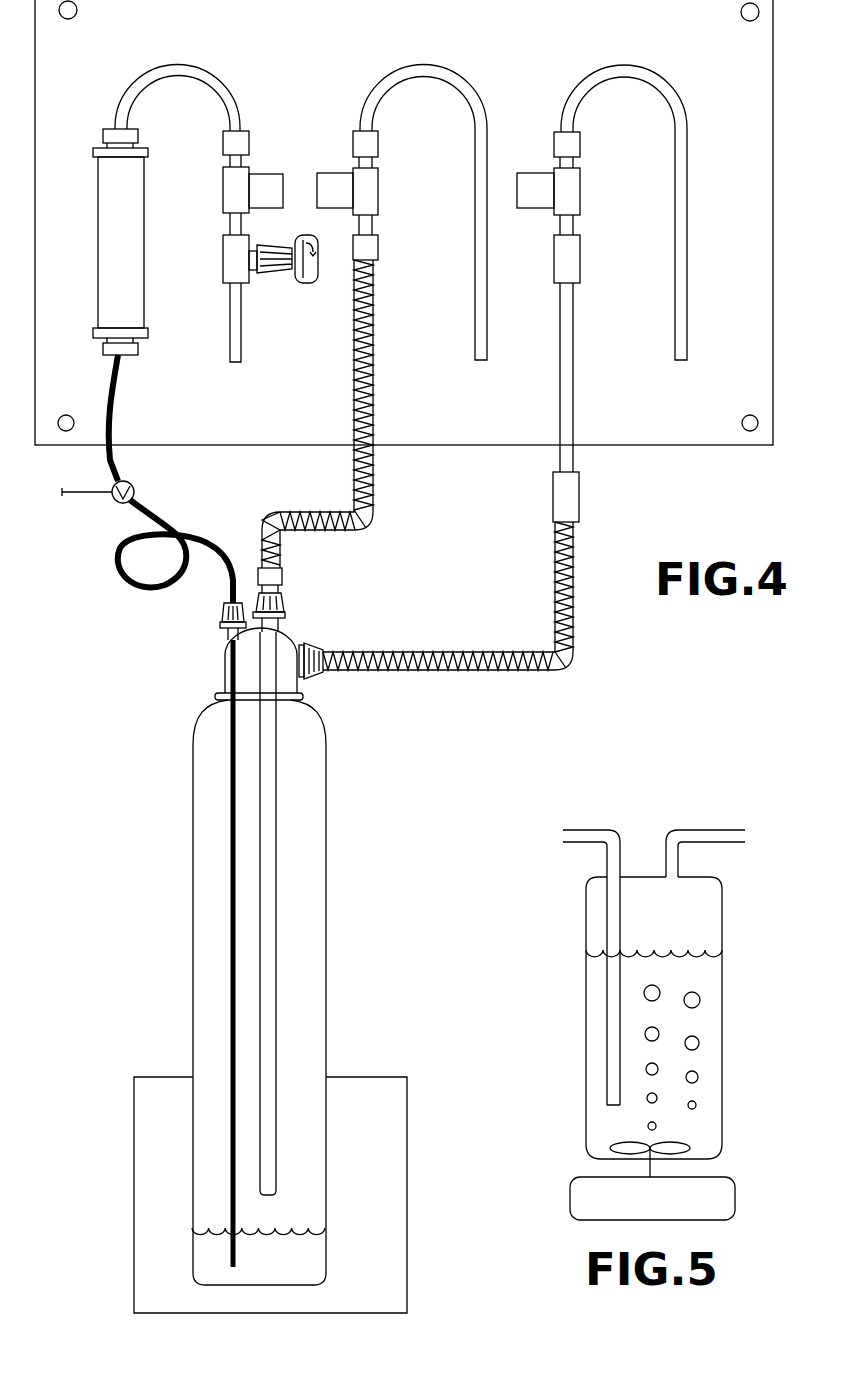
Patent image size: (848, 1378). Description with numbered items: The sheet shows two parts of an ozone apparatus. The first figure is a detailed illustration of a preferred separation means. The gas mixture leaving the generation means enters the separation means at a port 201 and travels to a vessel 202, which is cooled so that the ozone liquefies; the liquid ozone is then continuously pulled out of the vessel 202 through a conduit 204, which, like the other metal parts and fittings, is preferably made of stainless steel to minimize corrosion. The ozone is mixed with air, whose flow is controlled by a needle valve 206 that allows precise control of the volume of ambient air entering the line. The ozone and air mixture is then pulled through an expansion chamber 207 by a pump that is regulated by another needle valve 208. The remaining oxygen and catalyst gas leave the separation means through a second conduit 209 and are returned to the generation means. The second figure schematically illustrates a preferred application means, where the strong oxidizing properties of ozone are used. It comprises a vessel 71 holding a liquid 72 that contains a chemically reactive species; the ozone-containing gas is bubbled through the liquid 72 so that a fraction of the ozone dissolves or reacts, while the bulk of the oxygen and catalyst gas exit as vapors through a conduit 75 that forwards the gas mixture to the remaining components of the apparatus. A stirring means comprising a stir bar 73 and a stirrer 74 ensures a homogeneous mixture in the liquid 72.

In FIG. 4, the port 201 is at (474, 360).
In FIG. 4, the vessel 202 is at (192, 1174).
In FIG. 4, the conduit 204 is at (143, 517).
In FIG. 4, the needle valve 206 is at (113, 487).
In FIG. 4, the expansion chamber 207 is at (98, 218).
In FIG. 4, the needle valve 208 is at (230, 362).
In FIG. 4, the second conduit 209 is at (676, 360).
In FIG. 5, the vessel 71 is at (586, 975).
In FIG. 5, the liquid 72 is at (697, 1022).
In FIG. 5, the stir bar 73 is at (714, 1178).
In FIG. 5, the stirrer 74 is at (686, 1143).
In FIG. 5, the conduit 75 is at (722, 838).